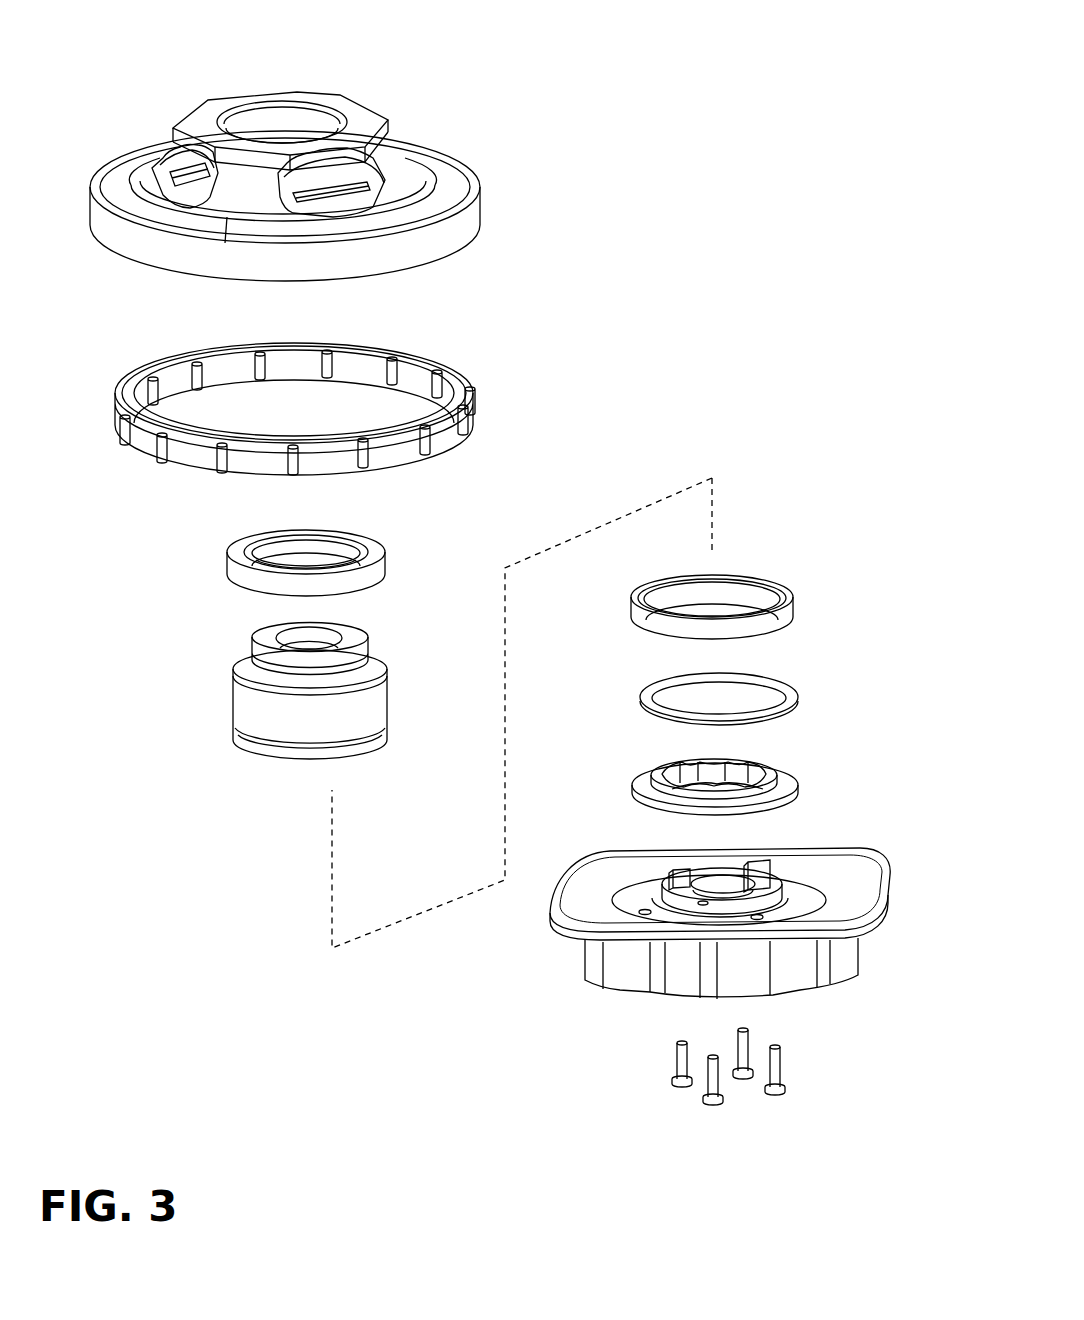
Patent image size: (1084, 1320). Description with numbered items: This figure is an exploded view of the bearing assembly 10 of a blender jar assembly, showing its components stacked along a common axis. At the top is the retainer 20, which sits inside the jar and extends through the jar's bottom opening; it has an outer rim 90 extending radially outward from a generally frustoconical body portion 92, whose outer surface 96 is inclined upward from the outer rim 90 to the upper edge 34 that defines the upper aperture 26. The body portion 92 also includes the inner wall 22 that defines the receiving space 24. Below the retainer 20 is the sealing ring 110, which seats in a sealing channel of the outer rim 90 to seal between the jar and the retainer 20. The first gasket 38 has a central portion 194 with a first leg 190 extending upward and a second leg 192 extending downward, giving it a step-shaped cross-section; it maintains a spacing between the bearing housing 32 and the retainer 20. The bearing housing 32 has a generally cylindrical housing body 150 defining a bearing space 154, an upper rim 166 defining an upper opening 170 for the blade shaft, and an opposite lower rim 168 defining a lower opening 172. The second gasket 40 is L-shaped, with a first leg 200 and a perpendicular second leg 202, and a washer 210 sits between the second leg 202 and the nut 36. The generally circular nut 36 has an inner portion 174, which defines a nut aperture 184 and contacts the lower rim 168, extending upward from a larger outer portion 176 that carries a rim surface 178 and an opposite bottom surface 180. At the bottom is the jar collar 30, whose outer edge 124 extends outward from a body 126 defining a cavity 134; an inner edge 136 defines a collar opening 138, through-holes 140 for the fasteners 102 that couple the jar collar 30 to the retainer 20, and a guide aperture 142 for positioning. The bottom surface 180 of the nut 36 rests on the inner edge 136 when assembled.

The bearing assembly 10 is at (683, 127).
The retainer 20 is at (425, 113).
The inner wall 22 is at (315, 125).
The receiving space 24 is at (242, 102).
The upper aperture 26 is at (317, 95).
The jar collar 30 is at (863, 927).
The bearing housing 32 is at (220, 685).
The upper edge 34 is at (253, 133).
The nut 36 is at (797, 768).
The first gasket 38 is at (227, 547).
The second gasket 40 is at (805, 612).
The outer rim 90 is at (457, 225).
The body portion 92 is at (385, 157).
The outer surface 96 is at (395, 177).
The fastener 102 is at (747, 1040).
The sealing ring 110 is at (185, 457).
The outer edge 124 is at (887, 875).
The body 126 is at (848, 947).
The cavity 134 is at (633, 952).
The inner edge 136 is at (773, 888).
The collar opening 138 is at (703, 883).
The through-hole 140 is at (737, 867).
The guide aperture 142 is at (760, 920).
The housing body 150 is at (343, 735).
The bearing space 154 is at (327, 710).
The upper rim 166 is at (353, 637).
The lower rim 168 is at (255, 748).
The upper opening 170 is at (280, 638).
The lower opening 172 is at (288, 762).
The inner portion 174 is at (767, 762).
The outer portion 176 is at (647, 787).
The rim surface 178 is at (783, 785).
The bottom surface 180 is at (660, 813).
The nut aperture 184 is at (687, 770).
The first leg 190 is at (347, 534).
The second leg 192 is at (247, 578).
The central portion 194 is at (377, 553).
The first leg 200 is at (762, 582).
The second leg 202 is at (660, 592).
The washer 210 is at (782, 685).